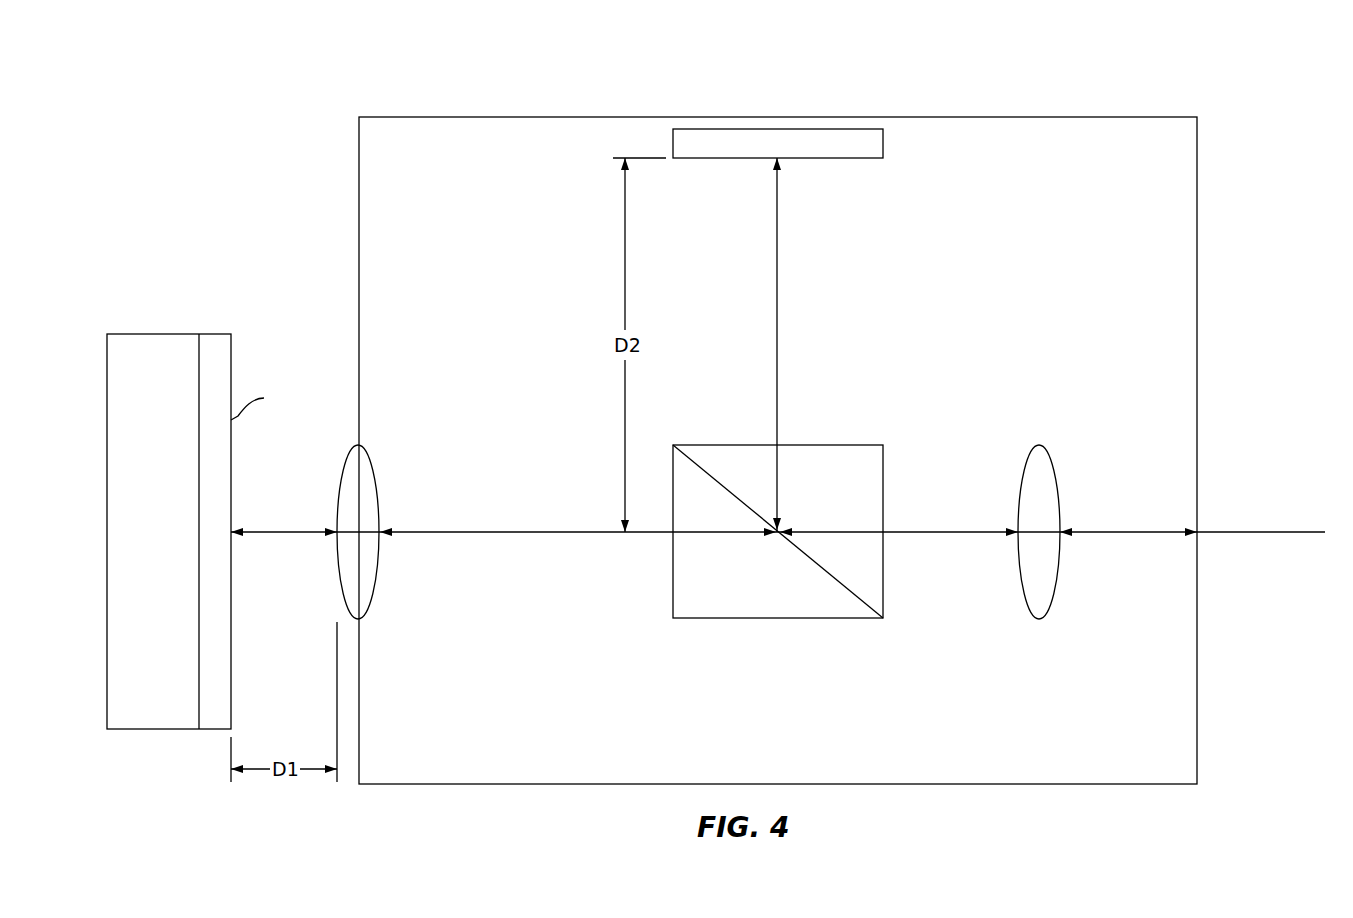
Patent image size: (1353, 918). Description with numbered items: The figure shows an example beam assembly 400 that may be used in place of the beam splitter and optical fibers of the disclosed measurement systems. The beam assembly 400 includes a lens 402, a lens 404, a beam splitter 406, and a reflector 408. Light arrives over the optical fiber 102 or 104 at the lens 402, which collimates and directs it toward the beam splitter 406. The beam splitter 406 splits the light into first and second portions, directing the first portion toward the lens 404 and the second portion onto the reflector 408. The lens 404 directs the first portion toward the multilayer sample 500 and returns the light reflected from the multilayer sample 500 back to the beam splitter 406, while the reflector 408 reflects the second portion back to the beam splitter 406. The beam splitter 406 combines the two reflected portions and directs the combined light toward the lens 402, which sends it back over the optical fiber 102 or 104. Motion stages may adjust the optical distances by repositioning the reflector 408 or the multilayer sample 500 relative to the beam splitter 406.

The beam assembly 400 is at (1264, 94).
The lens 402 is at (1039, 445).
The lens 404 is at (338, 512).
The beam splitter 406 is at (730, 445).
The reflector 408 is at (730, 129).
The multilayer sample 500 is at (162, 322).
The optical fiber 102 is at (778, 509).
The optical fiber 104 is at (1292, 532).